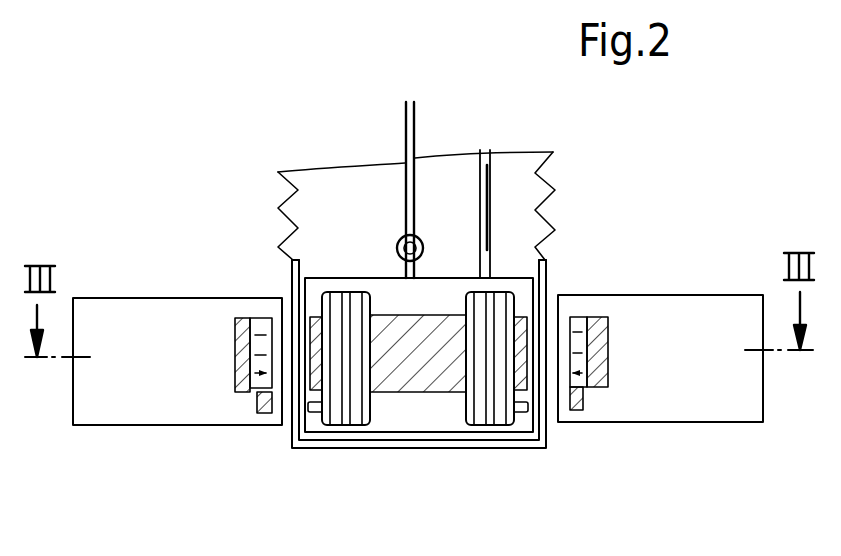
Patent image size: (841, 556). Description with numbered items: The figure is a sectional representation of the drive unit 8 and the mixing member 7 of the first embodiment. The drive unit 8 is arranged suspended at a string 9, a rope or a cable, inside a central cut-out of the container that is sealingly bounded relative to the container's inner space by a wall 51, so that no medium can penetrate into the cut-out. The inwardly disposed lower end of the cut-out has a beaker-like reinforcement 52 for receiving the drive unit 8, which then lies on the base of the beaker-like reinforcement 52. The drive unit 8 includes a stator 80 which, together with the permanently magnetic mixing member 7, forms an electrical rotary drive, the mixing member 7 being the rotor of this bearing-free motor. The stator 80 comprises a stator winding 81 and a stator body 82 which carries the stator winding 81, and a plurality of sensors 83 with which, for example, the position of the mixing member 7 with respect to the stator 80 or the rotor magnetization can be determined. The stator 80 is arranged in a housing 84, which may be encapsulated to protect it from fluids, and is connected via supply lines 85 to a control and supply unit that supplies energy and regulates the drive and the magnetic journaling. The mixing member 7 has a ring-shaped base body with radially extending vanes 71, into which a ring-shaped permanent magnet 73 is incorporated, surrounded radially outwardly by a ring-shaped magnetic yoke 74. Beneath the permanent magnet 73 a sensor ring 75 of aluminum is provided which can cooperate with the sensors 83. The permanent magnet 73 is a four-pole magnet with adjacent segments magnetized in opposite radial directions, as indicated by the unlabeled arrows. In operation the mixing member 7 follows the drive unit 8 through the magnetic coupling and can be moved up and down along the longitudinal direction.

The mixing member 7 is at (122, 292).
The vanes 71 is at (677, 312).
The ring-shaped permanent magnet 73 is at (262, 327).
The magnetic yoke 74 is at (238, 320).
The sensor ring 75 is at (583, 403).
The drive unit 8 is at (435, 268).
The string 9 is at (416, 137).
The supply lines 85 is at (492, 193).
The wall 51 is at (550, 232).
The beaker-like reinforcement 52 is at (347, 448).
The housing 84 is at (338, 278).
The stator body 82 is at (442, 375).
The sensors 83 is at (318, 412).
The stator 80 is at (380, 413).
The stator winding 81 is at (490, 412).